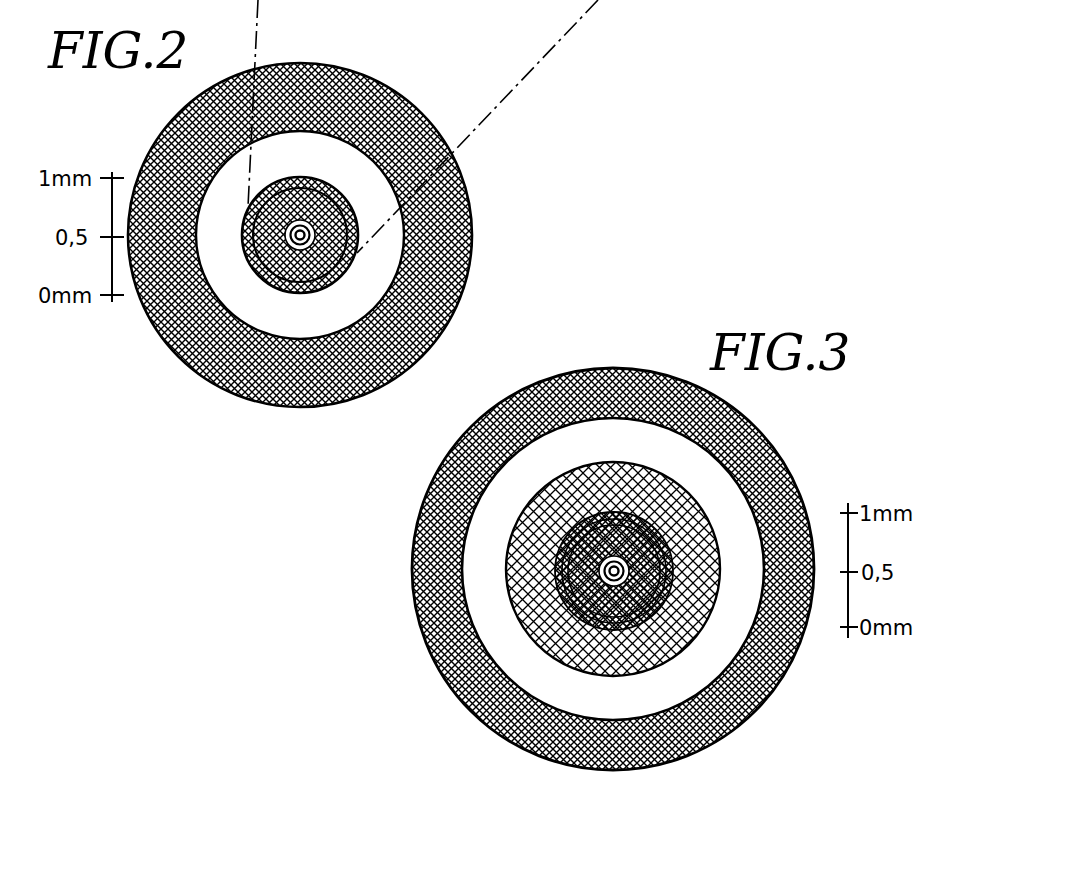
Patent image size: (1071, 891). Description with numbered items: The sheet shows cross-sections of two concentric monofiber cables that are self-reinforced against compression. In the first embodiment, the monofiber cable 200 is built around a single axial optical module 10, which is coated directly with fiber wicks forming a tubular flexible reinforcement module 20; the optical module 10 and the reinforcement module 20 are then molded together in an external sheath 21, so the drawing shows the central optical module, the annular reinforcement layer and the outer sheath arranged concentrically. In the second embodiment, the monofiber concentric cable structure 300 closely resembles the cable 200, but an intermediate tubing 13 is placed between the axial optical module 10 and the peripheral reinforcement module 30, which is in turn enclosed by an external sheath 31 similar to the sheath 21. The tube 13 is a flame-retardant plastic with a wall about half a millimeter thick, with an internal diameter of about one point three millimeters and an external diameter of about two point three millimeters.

In FIG. 2, the axial optical module 10 is at (350, 194).
In FIG. 3, the axial optical module 10 is at (548, 606).
In FIG. 3, the intermediate tubing 13 is at (510, 596).
In FIG. 2, the tubular flexible reinforcement module 20 is at (458, 206).
In FIG. 2, the external sheath 21 is at (473, 268).
In FIG. 2, the monofiber cable 200 is at (373, 235).
In FIG. 3, the peripheral reinforcement module 30 is at (482, 549).
In FIG. 3, the external sheath 31 is at (427, 500).
In FIG. 3, the monofiber concentric cable structure 300 is at (519, 569).